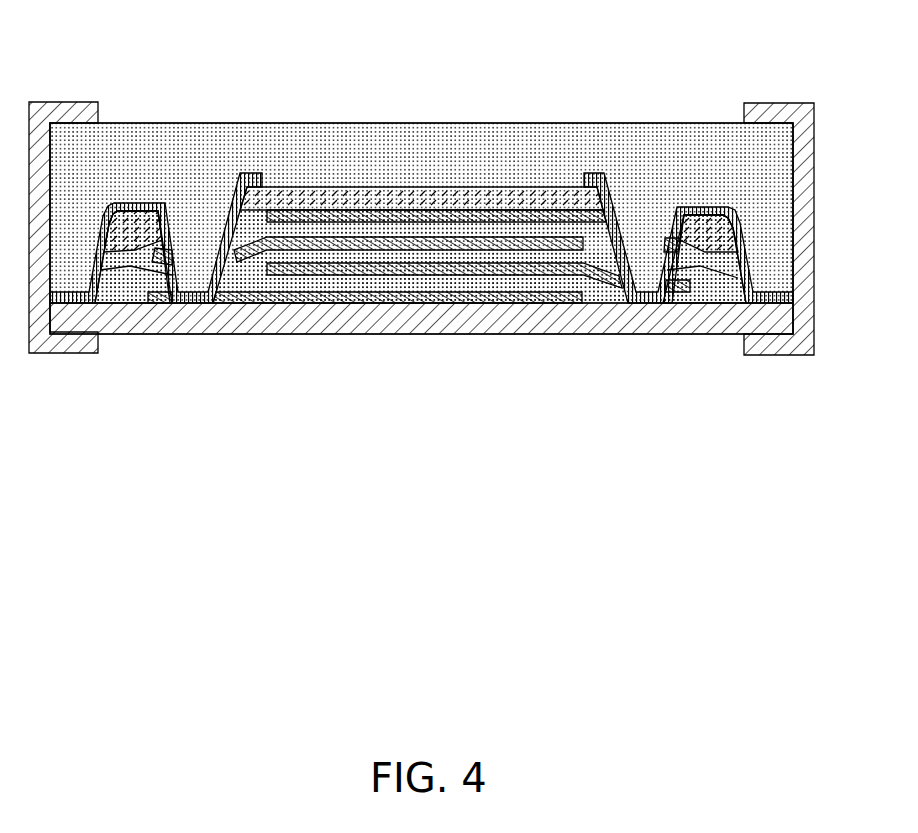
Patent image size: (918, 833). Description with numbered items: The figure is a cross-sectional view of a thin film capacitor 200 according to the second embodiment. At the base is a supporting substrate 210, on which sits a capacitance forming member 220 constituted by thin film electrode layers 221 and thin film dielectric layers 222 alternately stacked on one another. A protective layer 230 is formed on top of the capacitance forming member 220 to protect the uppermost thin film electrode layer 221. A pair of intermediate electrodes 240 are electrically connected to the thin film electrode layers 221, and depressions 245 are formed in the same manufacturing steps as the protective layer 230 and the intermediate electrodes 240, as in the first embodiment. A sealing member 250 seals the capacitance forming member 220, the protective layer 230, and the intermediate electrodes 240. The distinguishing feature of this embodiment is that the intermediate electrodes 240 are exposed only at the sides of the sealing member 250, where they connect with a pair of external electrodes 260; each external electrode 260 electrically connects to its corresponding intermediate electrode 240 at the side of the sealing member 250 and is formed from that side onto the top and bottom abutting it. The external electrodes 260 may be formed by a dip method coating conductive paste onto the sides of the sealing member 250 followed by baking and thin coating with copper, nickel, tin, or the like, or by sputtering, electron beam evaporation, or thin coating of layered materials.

The thin film capacitor 200 is at (411, 64).
The supporting substrate 210 is at (292, 334).
The capacitance forming member 220 is at (565, 400).
The thin film electrode layer 221 is at (500, 303).
The thin film dielectric layer 222 is at (528, 283).
The protective layer 230 is at (470, 188).
The intermediate electrode 240 is at (256, 173).
The depression 245 is at (194, 205).
The sealing member 250 is at (355, 160).
The external electrode 260 is at (68, 102).